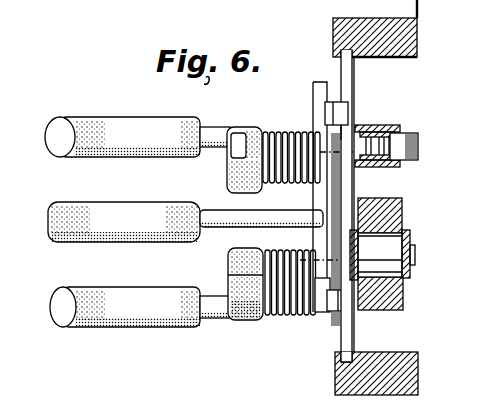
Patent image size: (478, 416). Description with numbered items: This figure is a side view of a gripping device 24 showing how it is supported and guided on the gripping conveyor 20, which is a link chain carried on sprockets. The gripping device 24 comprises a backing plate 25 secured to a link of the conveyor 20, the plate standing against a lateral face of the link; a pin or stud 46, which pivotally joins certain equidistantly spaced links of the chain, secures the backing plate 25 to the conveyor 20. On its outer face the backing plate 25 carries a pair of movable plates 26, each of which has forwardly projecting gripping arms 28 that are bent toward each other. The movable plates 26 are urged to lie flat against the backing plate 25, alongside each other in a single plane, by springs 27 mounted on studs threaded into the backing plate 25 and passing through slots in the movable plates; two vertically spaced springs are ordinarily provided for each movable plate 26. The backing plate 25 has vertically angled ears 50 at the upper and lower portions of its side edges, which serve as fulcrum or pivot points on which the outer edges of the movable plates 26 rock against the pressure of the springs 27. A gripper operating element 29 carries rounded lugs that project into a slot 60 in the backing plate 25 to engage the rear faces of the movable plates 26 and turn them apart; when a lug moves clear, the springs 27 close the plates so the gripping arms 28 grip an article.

The gripping conveyor 20 is at (398, 317).
The gripping device 24 is at (239, 324).
The backing plate 25 is at (342, 333).
The movable plate 26 is at (322, 315).
The spring 27 is at (297, 118).
The gripping arm 28 is at (135, 322).
The gripper operating element 29 is at (410, 130).
The pin or stud 46 is at (382, 248).
The ear 50 is at (339, 110).
The slot 60 is at (350, 133).